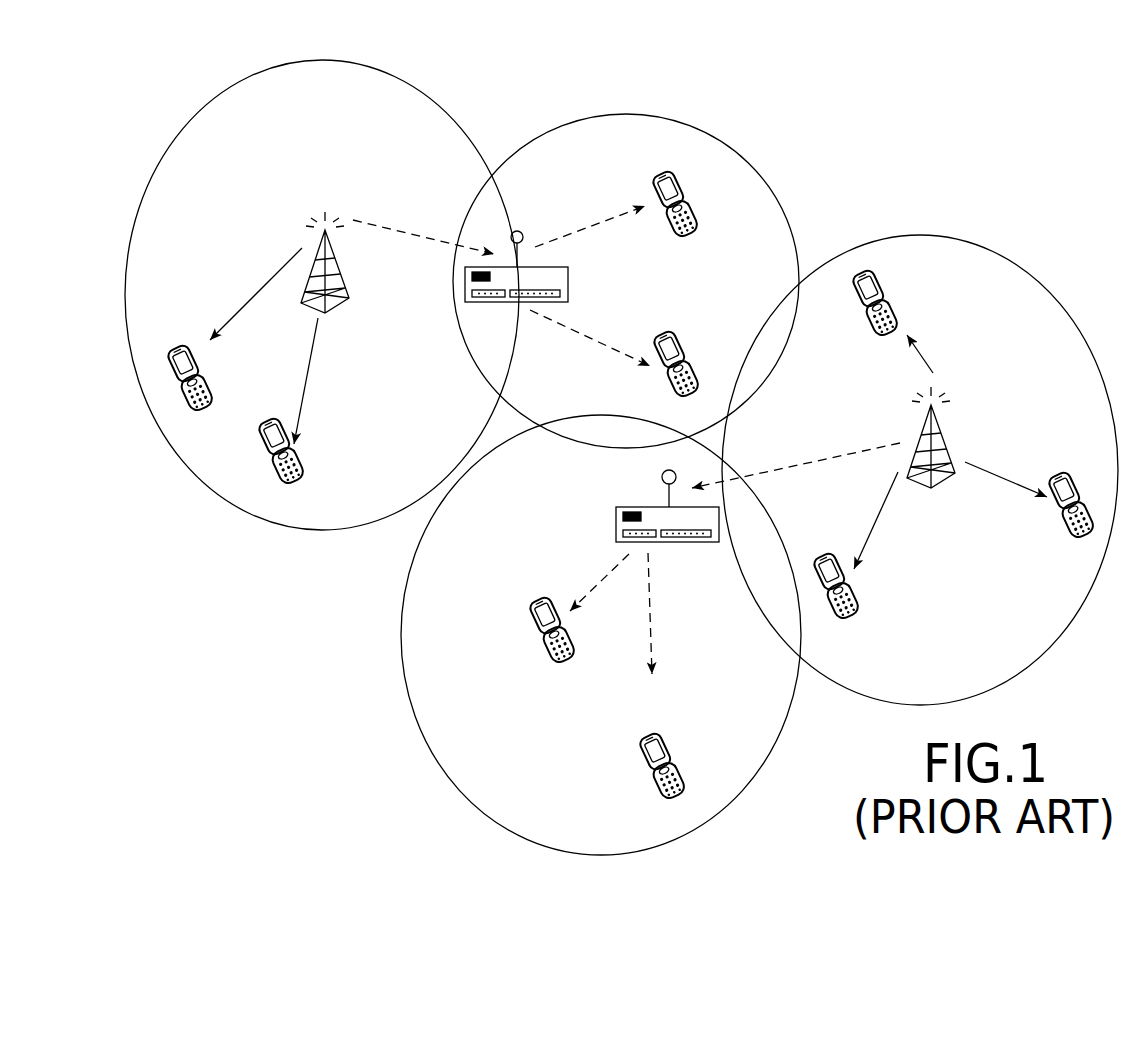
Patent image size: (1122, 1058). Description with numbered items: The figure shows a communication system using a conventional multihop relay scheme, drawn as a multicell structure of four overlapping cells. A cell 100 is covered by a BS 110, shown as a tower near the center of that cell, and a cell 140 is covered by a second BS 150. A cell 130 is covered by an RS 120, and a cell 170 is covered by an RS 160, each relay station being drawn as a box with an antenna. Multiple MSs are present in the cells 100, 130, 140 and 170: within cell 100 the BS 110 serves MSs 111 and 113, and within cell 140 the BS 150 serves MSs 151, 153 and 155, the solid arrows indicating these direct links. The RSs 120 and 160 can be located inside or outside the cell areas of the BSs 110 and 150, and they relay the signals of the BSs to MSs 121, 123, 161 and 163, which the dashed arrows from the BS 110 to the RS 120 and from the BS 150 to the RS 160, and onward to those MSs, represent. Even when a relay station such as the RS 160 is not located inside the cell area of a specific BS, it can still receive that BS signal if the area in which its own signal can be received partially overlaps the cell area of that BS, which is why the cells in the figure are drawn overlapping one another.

The cell 100 is at (318, 60).
The BS 110 is at (346, 268).
The mobile station MS 111 is at (179, 349).
The mobile station MS 113 is at (271, 418).
The RS 120 is at (569, 282).
The MS 121 is at (668, 332).
The MS 123 is at (668, 172).
The cell 130 is at (626, 112).
The cell 140 is at (922, 235).
The BS 150 is at (952, 446).
The mobile station MS 151 is at (884, 283).
The mobile station MS 153 is at (1058, 473).
The mobile station MS 155 is at (824, 555).
The RS 160 is at (616, 528).
The MS 161 is at (541, 596).
The MS 163 is at (654, 732).
The cell 170 is at (401, 640).